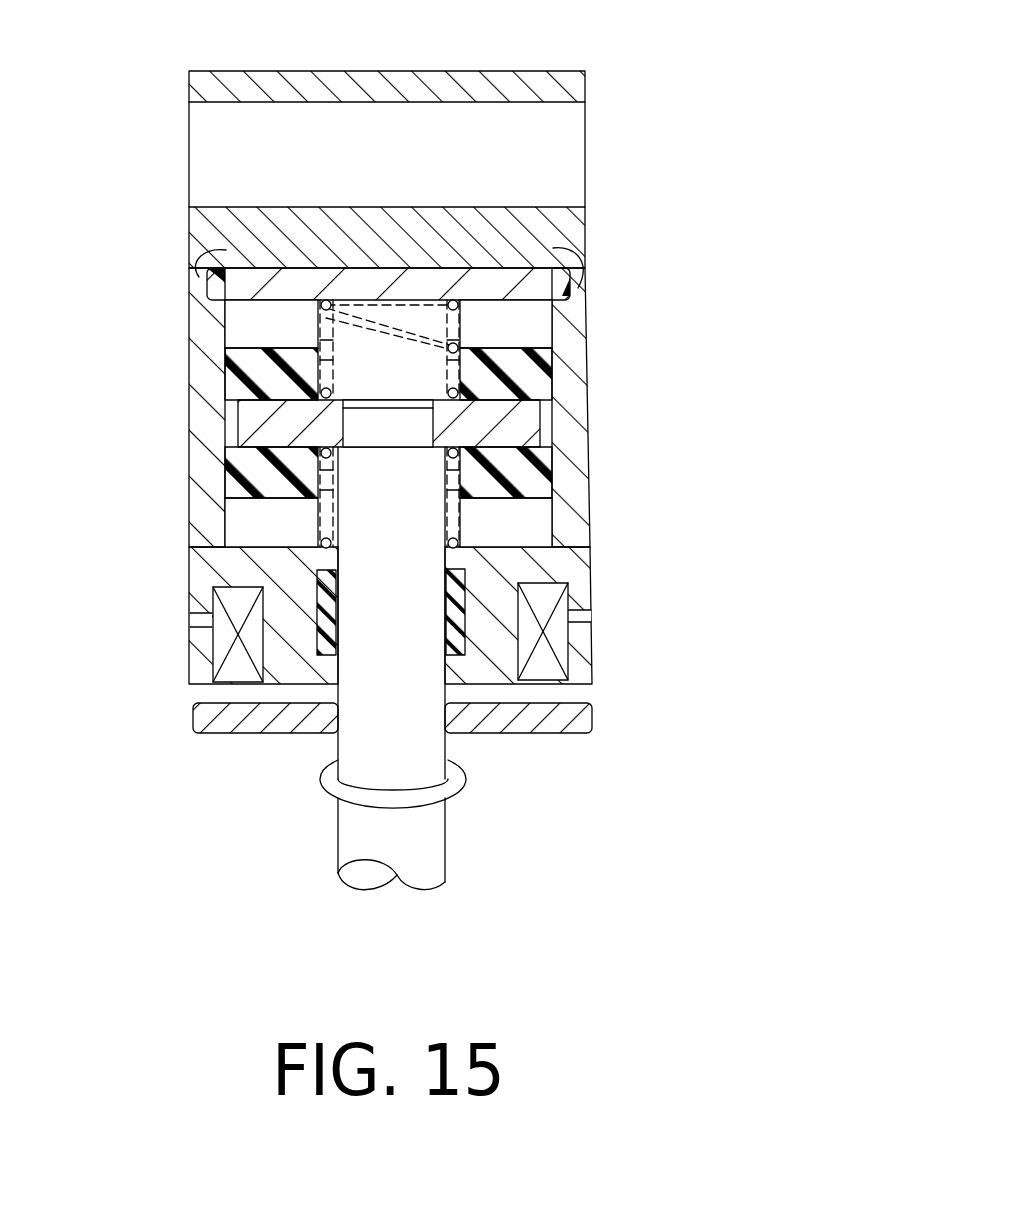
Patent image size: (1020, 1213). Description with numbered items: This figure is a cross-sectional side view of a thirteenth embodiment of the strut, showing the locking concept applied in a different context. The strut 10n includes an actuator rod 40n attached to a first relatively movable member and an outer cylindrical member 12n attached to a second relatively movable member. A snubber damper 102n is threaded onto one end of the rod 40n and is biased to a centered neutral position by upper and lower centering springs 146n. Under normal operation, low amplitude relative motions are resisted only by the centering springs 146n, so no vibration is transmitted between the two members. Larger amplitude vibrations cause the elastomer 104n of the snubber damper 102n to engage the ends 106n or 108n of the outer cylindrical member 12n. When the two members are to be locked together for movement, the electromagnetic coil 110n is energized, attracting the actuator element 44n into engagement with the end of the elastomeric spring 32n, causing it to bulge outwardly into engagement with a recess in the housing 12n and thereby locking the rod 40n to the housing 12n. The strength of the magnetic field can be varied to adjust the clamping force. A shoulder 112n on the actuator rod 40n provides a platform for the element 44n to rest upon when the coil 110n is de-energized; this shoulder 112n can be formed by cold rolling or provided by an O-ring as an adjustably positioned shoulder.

The strut 10n is at (512, 223).
The outer cylindrical member 12n is at (637, 444).
The end of outer cylindrical member 106n is at (490, 290).
The elastomer 104n is at (485, 346).
The end of outer cylindrical member 108n is at (502, 547).
The snubber damper 102n is at (594, 371).
The centering springs 146n is at (272, 324).
The electromagnetic coil 110n is at (582, 640).
The elastomeric spring 32n is at (318, 617).
The actuator element 44n is at (581, 752).
The shoulder 112n is at (320, 778).
The actuator rod 40n is at (489, 853).